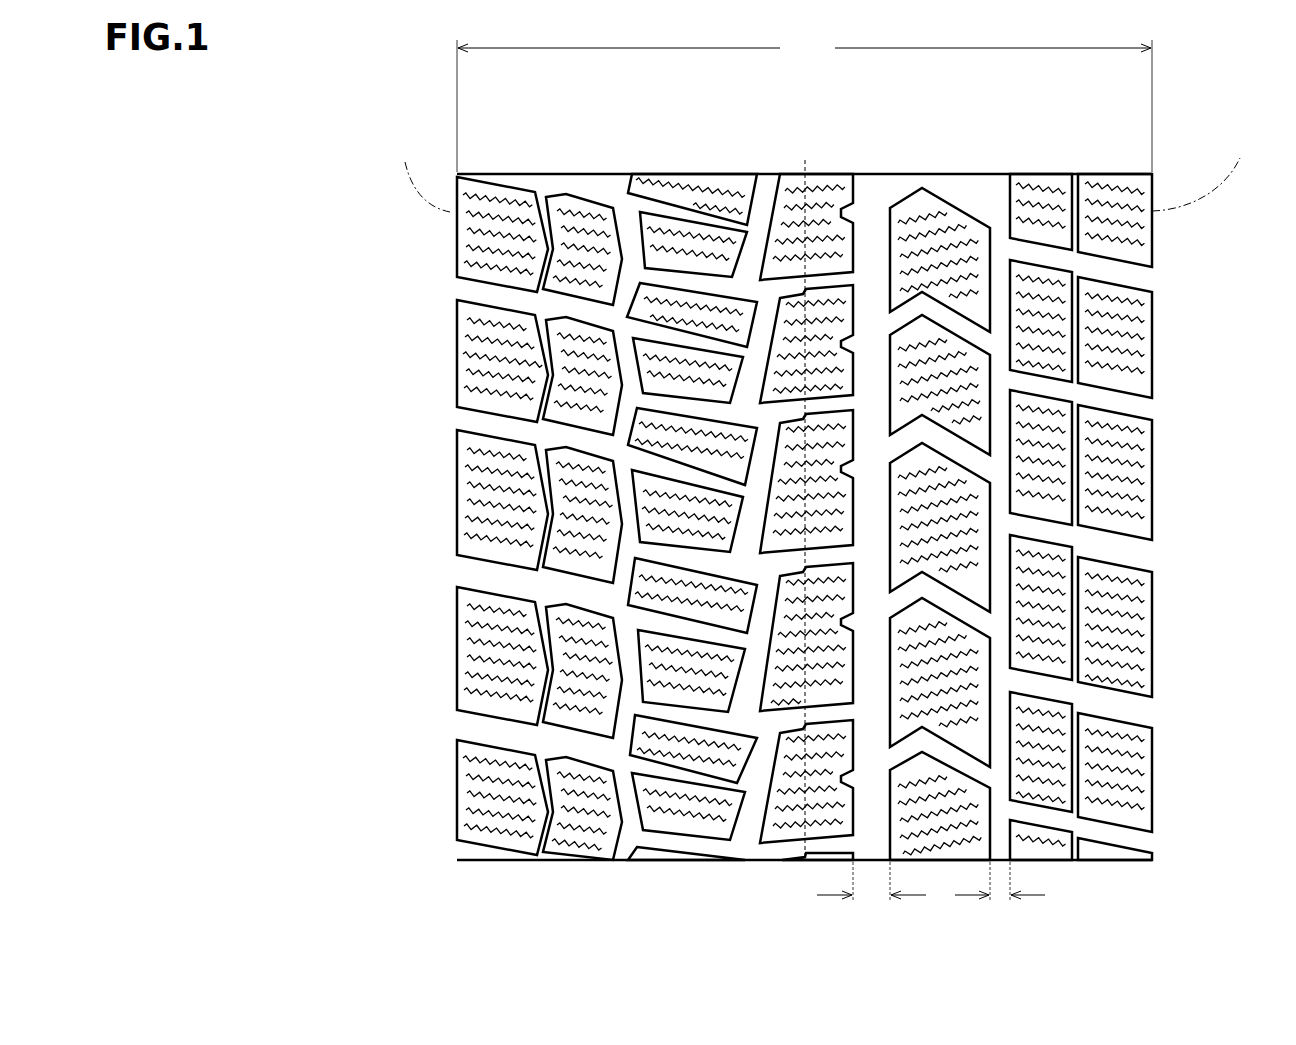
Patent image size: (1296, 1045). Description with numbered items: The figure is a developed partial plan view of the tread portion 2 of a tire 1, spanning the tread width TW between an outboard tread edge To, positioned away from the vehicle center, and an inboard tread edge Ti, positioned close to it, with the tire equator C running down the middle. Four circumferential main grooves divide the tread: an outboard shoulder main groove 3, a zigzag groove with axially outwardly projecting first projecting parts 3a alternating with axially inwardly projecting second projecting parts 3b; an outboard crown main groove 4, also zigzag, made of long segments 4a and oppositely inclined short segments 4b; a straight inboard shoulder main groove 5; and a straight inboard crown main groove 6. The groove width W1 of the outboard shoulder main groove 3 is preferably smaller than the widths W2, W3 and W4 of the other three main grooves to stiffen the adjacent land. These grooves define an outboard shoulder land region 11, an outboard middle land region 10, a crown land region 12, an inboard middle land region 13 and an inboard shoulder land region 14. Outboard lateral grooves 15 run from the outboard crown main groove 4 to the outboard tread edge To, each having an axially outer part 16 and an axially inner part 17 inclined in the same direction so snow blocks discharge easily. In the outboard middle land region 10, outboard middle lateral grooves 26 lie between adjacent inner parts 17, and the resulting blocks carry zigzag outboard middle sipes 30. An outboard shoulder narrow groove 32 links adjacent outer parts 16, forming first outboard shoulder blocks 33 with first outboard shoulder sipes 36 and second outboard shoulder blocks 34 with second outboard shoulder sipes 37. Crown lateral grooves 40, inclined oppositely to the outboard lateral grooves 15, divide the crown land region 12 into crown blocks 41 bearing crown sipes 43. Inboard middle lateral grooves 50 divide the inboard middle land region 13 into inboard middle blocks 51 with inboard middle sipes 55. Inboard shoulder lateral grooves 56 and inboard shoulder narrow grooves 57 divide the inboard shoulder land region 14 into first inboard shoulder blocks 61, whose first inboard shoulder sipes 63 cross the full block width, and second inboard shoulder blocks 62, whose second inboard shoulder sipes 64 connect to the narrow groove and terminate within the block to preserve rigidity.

The tire 1 is at (851, 170).
The tread portion 2 is at (1078, 462).
The outboard shoulder main groove 3 is at (500, 480).
The first projecting parts 3a is at (613, 327).
The second projecting parts 3b is at (627, 395).
The outboard crown main groove 4 is at (569, 480).
The long segments 4a is at (755, 495).
The short segments 4b is at (747, 562).
The inboard shoulder main groove 5 is at (1000, 220).
The inboard crown main groove 6 is at (871, 213).
The outboard middle land region 10 is at (694, 245).
The outboard shoulder land region 11 is at (489, 458).
The crown land region 12 is at (1013, 480).
The inboard middle land region 13 is at (925, 238).
The inboard shoulder land region 14 is at (1138, 458).
The outboard lateral grooves 15 is at (521, 644).
The axially outer part 16 is at (578, 600).
The axially inner part 17 is at (655, 624).
The outboard middle lateral grooves 26 is at (681, 719).
The outboard middle sipes 30 is at (689, 797).
The outboard shoulder narrow groove 32 is at (535, 338).
The first outboard shoulder blocks 33 is at (586, 248).
The second outboard shoulder blocks 34 is at (503, 230).
The first outboard shoulder sipes 36 is at (569, 797).
The second outboard shoulder sipes 37 is at (503, 809).
The crown lateral grooves 40 is at (832, 277).
The crown blocks 41 is at (814, 346).
The crown sipes 43 is at (793, 794).
The inboard middle lateral grooves 50 is at (942, 449).
The inboard middle blocks 51 is at (945, 391).
The inboard middle sipes 55 is at (939, 679).
The inboard shoulder lateral grooves 56 is at (1090, 547).
The inboard shoulder narrow grooves 57 is at (1084, 487).
The first inboard shoulder blocks 61 is at (1138, 481).
The second inboard shoulder blocks 62 is at (1172, 481).
The first inboard shoulder sipes 63 is at (1040, 621).
The second inboard shoulder sipes 64 is at (1112, 653).
The tire equator C is at (801, 491).
The tread width TW is at (804, 102).
The outboard tread edge To is at (419, 170).
The inboard tread edge Ti is at (1201, 168).
The groove width of outboard shoulder main groove W1 is at (629, 809).
The groove width of outboard crown main groove W2 is at (751, 794).
The groove width of inboard shoulder main groove W3 is at (1000, 899).
The groove width of inboard crown main groove W4 is at (871, 899).